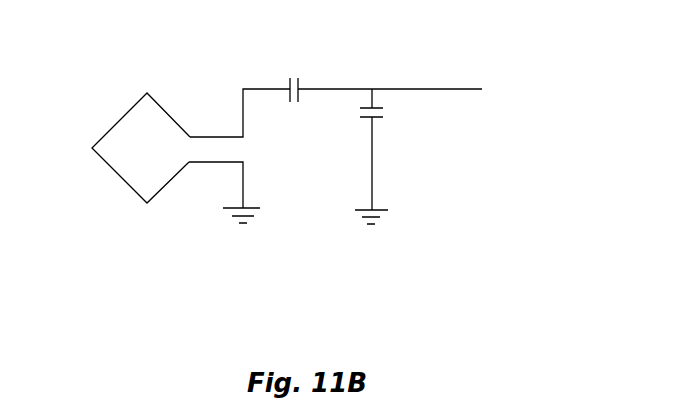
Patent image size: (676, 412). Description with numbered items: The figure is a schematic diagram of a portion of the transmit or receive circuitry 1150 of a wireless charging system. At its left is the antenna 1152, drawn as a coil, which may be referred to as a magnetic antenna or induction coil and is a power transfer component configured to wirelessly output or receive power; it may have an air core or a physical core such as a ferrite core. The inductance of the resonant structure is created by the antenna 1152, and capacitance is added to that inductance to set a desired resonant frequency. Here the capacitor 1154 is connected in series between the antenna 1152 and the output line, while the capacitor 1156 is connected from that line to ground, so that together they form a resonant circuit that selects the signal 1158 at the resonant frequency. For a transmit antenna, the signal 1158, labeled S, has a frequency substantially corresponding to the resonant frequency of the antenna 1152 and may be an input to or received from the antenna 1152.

The transmit or receive circuitry 1150 is at (187, 42).
The antenna 1152 is at (119, 117).
The capacitor 1154 is at (300, 81).
The capacitor 1156 is at (375, 117).
The signal 1158 is at (505, 73).